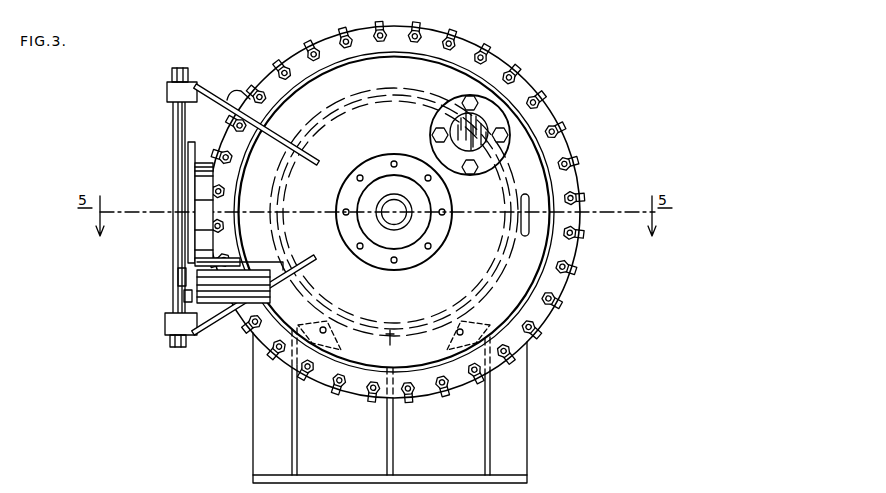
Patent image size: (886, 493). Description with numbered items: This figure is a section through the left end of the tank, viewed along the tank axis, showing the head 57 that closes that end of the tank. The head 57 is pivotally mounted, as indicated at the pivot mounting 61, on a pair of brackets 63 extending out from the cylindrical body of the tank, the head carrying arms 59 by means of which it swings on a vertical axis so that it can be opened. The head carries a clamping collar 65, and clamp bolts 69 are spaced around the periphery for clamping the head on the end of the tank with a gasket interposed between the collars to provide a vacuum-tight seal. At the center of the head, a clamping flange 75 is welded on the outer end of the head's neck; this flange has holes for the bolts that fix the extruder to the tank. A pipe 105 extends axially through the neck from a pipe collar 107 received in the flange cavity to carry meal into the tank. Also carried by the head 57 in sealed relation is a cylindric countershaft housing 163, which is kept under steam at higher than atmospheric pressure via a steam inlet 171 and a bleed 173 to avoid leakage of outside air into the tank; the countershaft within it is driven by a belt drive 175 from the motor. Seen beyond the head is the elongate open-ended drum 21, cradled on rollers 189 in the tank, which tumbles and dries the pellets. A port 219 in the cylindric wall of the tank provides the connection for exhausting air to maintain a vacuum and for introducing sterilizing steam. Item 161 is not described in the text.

The drum 21 is at (390, 333).
The head 57 is at (534, 182).
The arms 59 is at (186, 72).
The pivot mounting 61 is at (173, 120).
The brackets 63 is at (238, 97).
The clamping collar 65 is at (282, 92).
The clamp bolts 69 is at (287, 70).
The clamping flange 75 is at (377, 164).
The pipe 105 is at (402, 218).
The pipe collar 107 is at (407, 238).
The bracket 161 is at (195, 262).
The countershaft housing 163 is at (278, 267).
The steam inlet 171 is at (237, 259).
The bleed 173 is at (190, 297).
The belt drive 175 is at (178, 272).
The rollers 189 is at (337, 337).
The port 219 is at (208, 163).